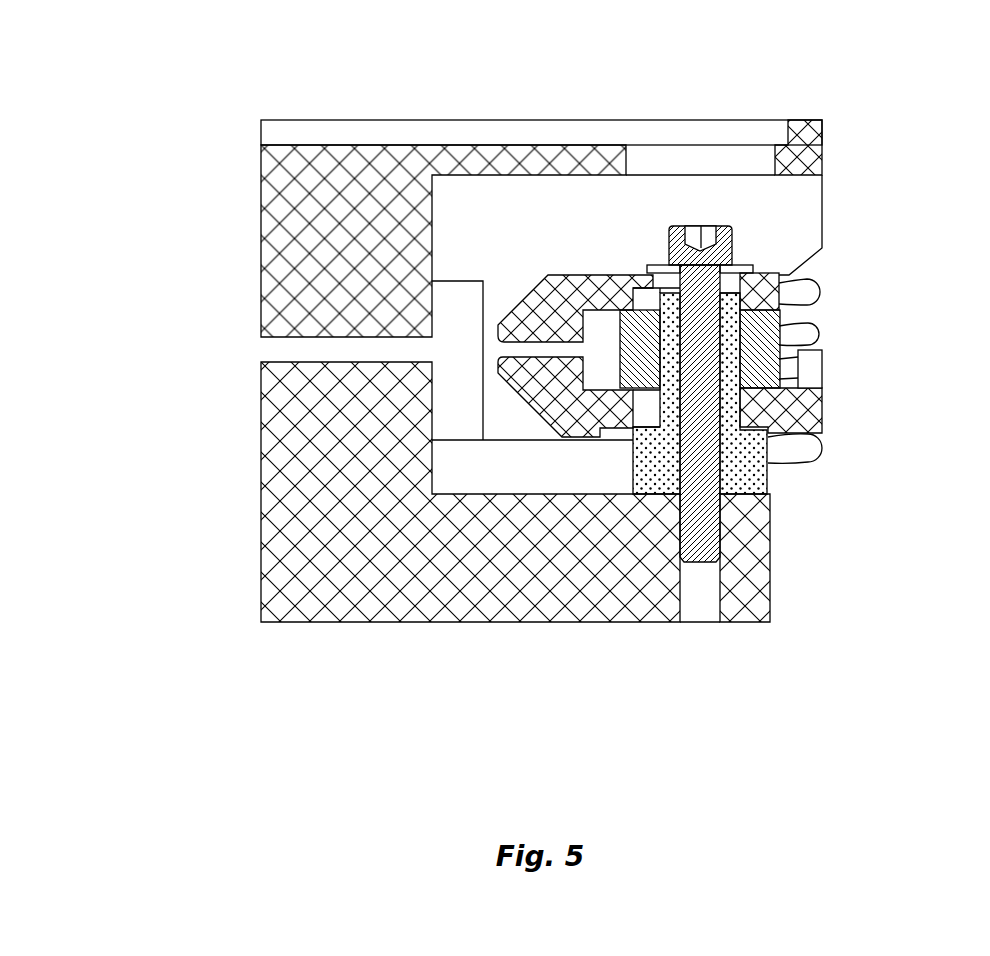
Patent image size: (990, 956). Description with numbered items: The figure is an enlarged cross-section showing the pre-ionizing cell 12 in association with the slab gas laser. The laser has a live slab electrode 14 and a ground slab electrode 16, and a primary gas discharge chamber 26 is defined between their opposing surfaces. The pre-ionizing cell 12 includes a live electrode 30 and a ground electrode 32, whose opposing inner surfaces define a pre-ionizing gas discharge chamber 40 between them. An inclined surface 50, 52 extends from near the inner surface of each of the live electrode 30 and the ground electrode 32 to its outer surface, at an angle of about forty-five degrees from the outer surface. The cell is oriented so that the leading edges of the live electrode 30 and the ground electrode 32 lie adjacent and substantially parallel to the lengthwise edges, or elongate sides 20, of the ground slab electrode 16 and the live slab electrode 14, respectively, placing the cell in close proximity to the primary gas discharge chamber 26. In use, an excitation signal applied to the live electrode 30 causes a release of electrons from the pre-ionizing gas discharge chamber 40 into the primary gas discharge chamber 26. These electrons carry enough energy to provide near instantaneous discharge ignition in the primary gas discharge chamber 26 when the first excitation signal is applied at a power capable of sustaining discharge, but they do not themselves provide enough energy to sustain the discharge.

The pre-ionizing cell 12 is at (855, 415).
The live slab electrode 14 is at (288, 238).
The ground slab electrode 16 is at (300, 512).
The elongate side 20 is at (433, 262).
The primary gas discharge chamber 26 is at (272, 349).
The live electrode 30 is at (558, 388).
The ground electrode 32 is at (578, 290).
The pre-ionizing gas discharge chamber 40 is at (553, 350).
The inclined surface 50 is at (517, 395).
The inclined surface 52 is at (515, 300).